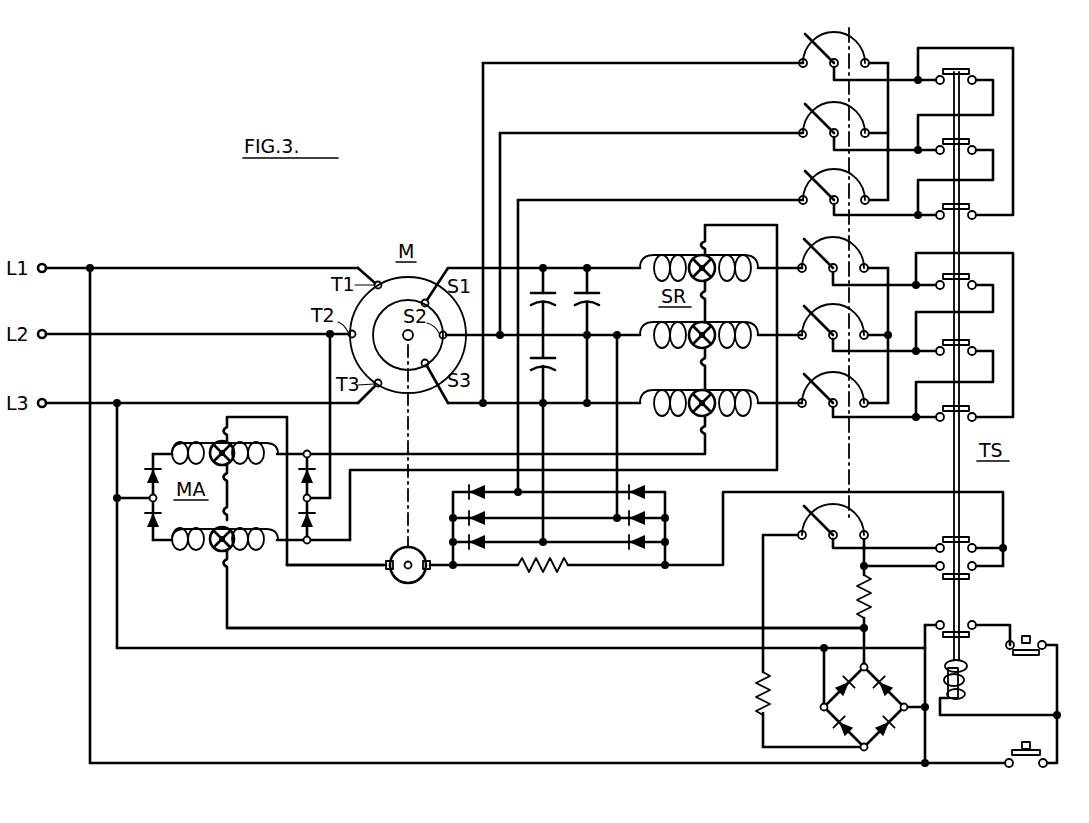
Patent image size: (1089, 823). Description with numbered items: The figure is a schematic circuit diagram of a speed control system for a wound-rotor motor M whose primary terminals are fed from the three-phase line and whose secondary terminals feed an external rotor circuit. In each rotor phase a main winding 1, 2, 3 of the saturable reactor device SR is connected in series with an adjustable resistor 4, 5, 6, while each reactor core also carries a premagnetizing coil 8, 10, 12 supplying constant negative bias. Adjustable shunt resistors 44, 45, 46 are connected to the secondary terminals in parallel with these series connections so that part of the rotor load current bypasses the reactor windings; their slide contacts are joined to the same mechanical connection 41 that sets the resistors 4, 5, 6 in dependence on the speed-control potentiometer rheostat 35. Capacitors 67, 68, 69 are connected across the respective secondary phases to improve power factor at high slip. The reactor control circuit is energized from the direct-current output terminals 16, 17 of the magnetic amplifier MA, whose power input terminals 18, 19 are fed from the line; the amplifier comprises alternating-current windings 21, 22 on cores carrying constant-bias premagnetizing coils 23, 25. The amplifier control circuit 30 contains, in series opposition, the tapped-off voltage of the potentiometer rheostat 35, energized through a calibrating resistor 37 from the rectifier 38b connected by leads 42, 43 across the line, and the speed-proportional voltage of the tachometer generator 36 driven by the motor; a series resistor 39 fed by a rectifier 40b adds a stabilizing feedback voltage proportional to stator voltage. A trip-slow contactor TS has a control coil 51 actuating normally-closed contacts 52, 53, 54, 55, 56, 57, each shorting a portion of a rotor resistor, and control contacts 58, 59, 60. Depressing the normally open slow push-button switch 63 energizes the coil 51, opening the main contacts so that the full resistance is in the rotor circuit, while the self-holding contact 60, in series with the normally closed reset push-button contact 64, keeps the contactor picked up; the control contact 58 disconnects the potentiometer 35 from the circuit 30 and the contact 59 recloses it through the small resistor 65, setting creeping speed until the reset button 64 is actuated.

The main winding 1 is at (664, 266).
The main winding 2 is at (666, 344).
The main winding 3 is at (666, 412).
The adjustable resistor 4 is at (858, 250).
The adjustable resistor 5 is at (855, 316).
The adjustable resistor 6 is at (853, 384).
The premagnetizing coil 8 is at (716, 282).
The premagnetizing coil 10 is at (712, 350).
The premagnetizing coil 12 is at (712, 424).
The direct-current output terminal 16 is at (304, 450).
The direct-current output terminal 17 is at (310, 542).
The power input terminal 18 is at (156, 502).
The power input terminal 19 is at (310, 502).
The alternating-current winding 21 is at (166, 443).
The alternating-current winding 22 is at (193, 556).
The premagnetizing coil 23 is at (230, 480).
The premagnetizing coil 25 is at (230, 562).
The amplifier control circuit 30 is at (337, 626).
The potentiometer rheostat 35 is at (859, 522).
The tachometer generator 36 is at (420, 580).
The calibrating resistor 37 is at (756, 686).
The rectifier 38b is at (884, 718).
The series-connected resistor 39 is at (541, 570).
The rectifier 40b is at (604, 516).
The connection 41 is at (851, 460).
The alternating-current lead 42 is at (592, 748).
The alternating-current lead 43 is at (588, 648).
The adjustable resistor 44 is at (854, 44).
The adjustable resistor 45 is at (860, 121).
The adjustable resistor 46 is at (860, 188).
The control coil 51 is at (961, 690).
The normally-closed contact 52 is at (971, 76).
The normally-closed contact 53 is at (971, 146).
The normally-closed contact 54 is at (971, 211).
The normally-closed contact 55 is at (971, 281).
The normally-closed contact 56 is at (971, 347).
The normally-closed contact 57 is at (971, 413).
The control contact 58 is at (970, 542).
The control contact 59 is at (969, 579).
The self-holding contact 60 is at (969, 636).
The push-button switch 63 is at (1010, 752).
The reset push-button contact 64 is at (1030, 642).
The resistor 65 is at (856, 592).
The capacitor 67 is at (545, 299).
The capacitor 68 is at (593, 291).
The capacitor 69 is at (545, 364).